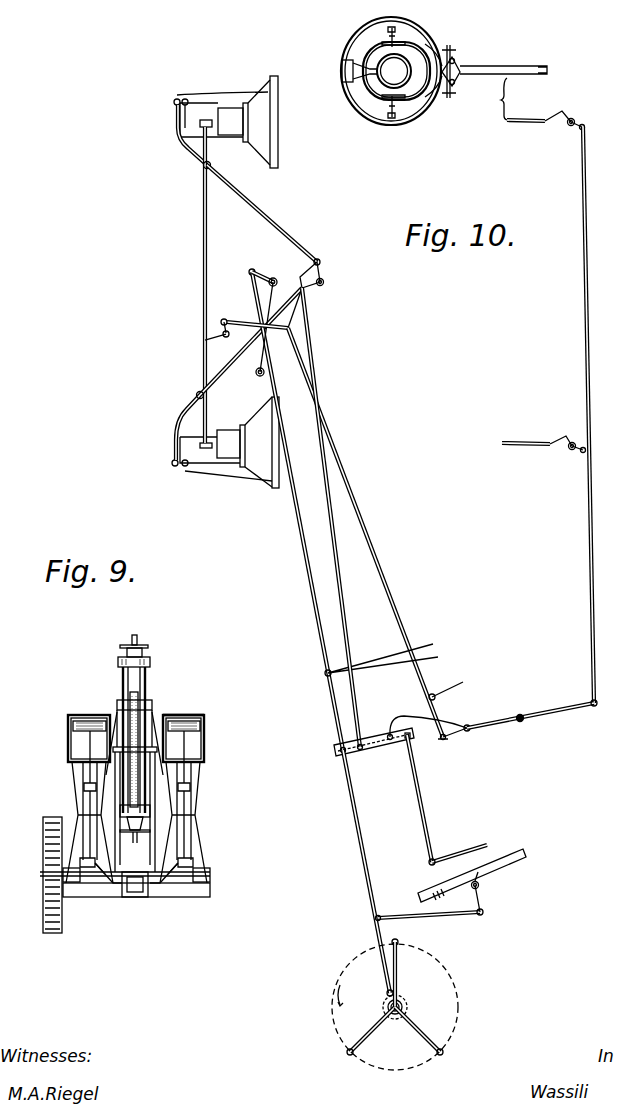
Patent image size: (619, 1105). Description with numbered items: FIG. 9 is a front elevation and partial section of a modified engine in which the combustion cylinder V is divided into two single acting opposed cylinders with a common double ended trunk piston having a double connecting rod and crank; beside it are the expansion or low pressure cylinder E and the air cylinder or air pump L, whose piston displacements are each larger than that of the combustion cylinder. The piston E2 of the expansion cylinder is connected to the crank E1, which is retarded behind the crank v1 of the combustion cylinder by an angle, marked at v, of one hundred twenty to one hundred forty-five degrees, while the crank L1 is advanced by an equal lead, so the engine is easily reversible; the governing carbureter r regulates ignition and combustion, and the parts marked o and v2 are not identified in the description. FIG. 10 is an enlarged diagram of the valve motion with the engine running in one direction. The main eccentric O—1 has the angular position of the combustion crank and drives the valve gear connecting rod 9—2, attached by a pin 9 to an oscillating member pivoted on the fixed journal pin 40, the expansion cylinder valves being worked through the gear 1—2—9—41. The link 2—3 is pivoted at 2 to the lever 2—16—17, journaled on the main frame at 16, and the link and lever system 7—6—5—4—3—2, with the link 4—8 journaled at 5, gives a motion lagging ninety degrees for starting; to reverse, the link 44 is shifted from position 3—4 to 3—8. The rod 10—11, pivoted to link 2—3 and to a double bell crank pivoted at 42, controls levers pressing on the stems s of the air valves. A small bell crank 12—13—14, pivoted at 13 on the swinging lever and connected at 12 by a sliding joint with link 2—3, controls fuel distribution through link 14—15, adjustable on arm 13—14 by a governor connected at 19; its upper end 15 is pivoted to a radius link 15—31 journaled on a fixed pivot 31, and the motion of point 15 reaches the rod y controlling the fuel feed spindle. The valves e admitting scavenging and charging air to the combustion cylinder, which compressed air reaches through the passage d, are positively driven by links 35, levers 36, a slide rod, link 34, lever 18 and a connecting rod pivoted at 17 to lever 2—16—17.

In FIG. 10, the lever 36 is at (422, 38).
In FIG. 10, the link 35 is at (461, 62).
In FIG. 10, the air passage d is at (451, 92).
In FIG. 10, the air admission valve e is at (387, 73).
In FIG. 10, the link 34 is at (542, 272).
In FIG. 10, the lever 18 is at (593, 405).
In FIG. 10, the valve stem s is at (207, 130).
In FIG. 10, the rod y is at (204, 264).
In FIG. 10, the bell crank pivot 42 is at (326, 283).
In FIG. 10, the pin 9 is at (285, 506).
In FIG. 10, the rod end 11 is at (284, 269).
In FIG. 10, the fixed journal pin 40 is at (264, 271).
In FIG. 10, the valve gear point 41 is at (283, 314).
In FIG. 10, the fixed pivot 31 is at (258, 384).
In FIG. 10, the link end 15 is at (257, 314).
In FIG. 10, the governor connection 19 is at (375, 532).
In FIG. 10, the sliding joint 12 is at (351, 528).
In FIG. 10, the pivot 2 is at (366, 742).
In FIG. 10, the rod end 10 is at (356, 762).
In FIG. 10, the link joint 3 is at (412, 746).
In FIG. 10, the bell crank pivot 13 is at (492, 728).
In FIG. 10, the bell crank arm end 14 is at (449, 747).
In FIG. 10, the main frame journal 16 is at (522, 729).
In FIG. 10, the pivot 17 is at (605, 711).
In FIG. 10, the link 44 is at (428, 802).
In FIG. 10, the link and lever system member 7 is at (360, 910).
In FIG. 10, the link end 4 is at (451, 885).
In FIG. 10, the link end 8 is at (479, 862).
In FIG. 10, the main frame journal 5 is at (485, 892).
In FIG. 10, the link and lever system member 6 is at (486, 920).
In FIG. 10, the main eccentric center O is at (395, 1014).
In FIG. 10, the combustion cylinder V is at (398, 964).
In FIG. 10, the main eccentric point 1 is at (383, 993).
In FIG. 10, the air cylinder L is at (360, 1038).
In FIG. 9, the air cylinder L is at (72, 739).
In FIG. 10, the expansion cylinder E is at (427, 1038).
In FIG. 9, the expansion cylinder E is at (198, 746).
In FIG. 9, the shaft o is at (214, 875).
In FIG. 9, the air cylinder crank L1 is at (90, 885).
In FIG. 9, the expansion piston E2 is at (203, 717).
In FIG. 9, the expansion cylinder crank E1 is at (184, 881).
In FIG. 9, the governing carbureter r is at (151, 656).
In FIG. 9, the crank angle marker v is at (146, 682).
In FIG. 9, the valve stem v2 is at (141, 701).
In FIG. 9, the combustion cylinder crank v1 is at (162, 872).